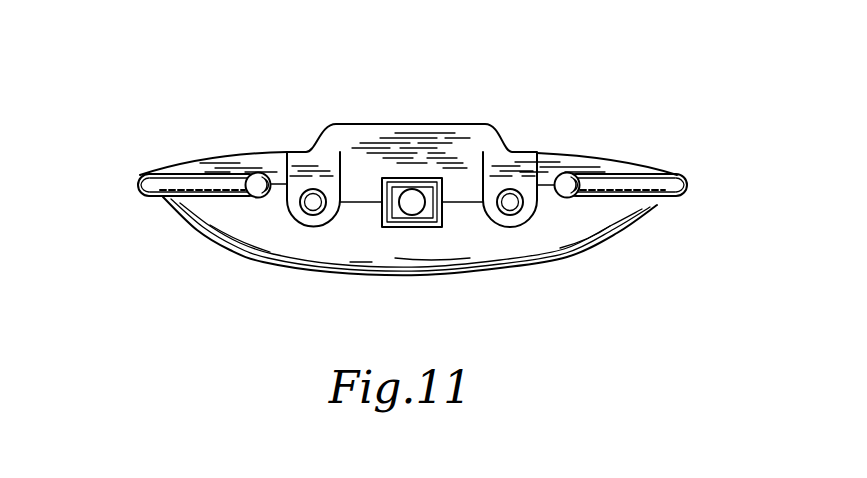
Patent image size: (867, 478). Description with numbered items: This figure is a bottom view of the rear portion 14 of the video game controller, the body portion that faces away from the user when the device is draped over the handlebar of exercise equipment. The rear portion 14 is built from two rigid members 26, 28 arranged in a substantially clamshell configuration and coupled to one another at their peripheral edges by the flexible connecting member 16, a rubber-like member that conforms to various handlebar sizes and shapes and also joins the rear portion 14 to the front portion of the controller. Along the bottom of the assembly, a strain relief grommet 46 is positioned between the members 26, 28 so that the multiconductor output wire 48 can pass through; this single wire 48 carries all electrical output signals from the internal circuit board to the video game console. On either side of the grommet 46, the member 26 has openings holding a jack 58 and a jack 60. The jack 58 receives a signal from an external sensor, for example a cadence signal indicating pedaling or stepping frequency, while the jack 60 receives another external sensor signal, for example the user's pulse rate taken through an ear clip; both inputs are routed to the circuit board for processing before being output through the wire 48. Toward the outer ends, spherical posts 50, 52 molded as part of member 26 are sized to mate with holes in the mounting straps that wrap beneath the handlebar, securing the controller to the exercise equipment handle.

The rear portion 14 is at (157, 127).
The flexible connecting member 16 is at (138, 183).
The rigid member 26 is at (618, 158).
The rigid member 28 is at (622, 245).
The strain relief grommet 46 is at (435, 225).
The multiconductor output wire 48 is at (412, 215).
The spherical post 50 is at (258, 170).
The spherical post 52 is at (568, 172).
The jack 58 is at (313, 215).
The jack 60 is at (510, 215).